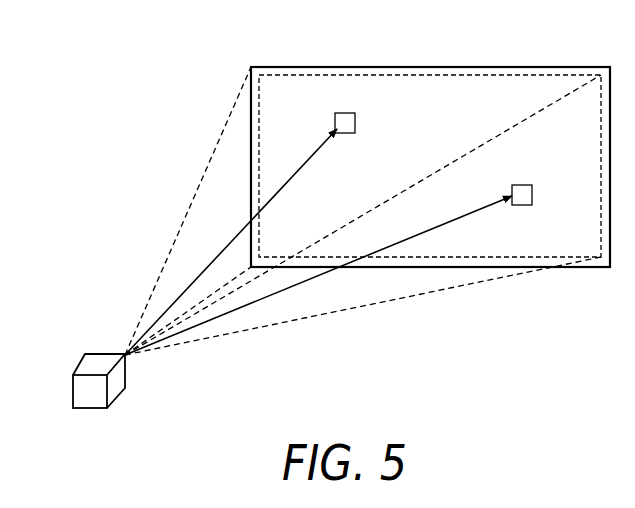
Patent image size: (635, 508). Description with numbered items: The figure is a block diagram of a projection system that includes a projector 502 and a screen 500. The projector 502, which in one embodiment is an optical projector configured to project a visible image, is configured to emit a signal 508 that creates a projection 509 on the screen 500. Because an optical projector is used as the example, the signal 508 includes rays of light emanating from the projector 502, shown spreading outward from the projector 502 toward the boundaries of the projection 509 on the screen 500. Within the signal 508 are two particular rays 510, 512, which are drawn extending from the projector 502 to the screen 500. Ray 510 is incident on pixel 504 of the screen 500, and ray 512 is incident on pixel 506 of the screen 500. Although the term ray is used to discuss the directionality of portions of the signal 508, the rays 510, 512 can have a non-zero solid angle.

The screen 500 is at (251, 78).
The projection 509 is at (432, 66).
The projector 502 is at (73, 388).
The pixel 504 is at (356, 121).
The pixel 506 is at (533, 195).
The signal 508 is at (177, 238).
The ray 510 is at (294, 176).
The ray 512 is at (463, 217).